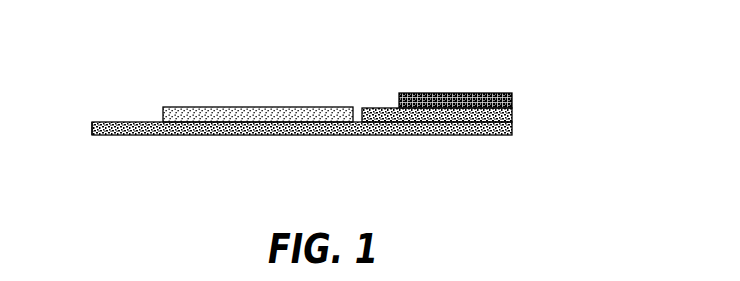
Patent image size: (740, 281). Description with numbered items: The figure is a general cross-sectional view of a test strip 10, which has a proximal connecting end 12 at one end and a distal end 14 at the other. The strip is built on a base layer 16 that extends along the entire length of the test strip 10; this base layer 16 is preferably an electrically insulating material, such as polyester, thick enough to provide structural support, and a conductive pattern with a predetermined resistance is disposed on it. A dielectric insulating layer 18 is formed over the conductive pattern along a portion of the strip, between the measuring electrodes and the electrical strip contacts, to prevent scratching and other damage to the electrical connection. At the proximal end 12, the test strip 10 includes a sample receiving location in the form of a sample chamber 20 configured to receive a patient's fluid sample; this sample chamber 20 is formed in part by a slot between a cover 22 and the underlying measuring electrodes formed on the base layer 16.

The test strip 10 is at (344, 82).
The proximal connecting end 12 is at (591, 104).
The distal end 14 is at (92, 123).
The base layer 16 is at (368, 131).
The dielectric insulating layer 18 is at (258, 128).
The sample chamber 20 is at (509, 108).
The cover 22 is at (498, 130).